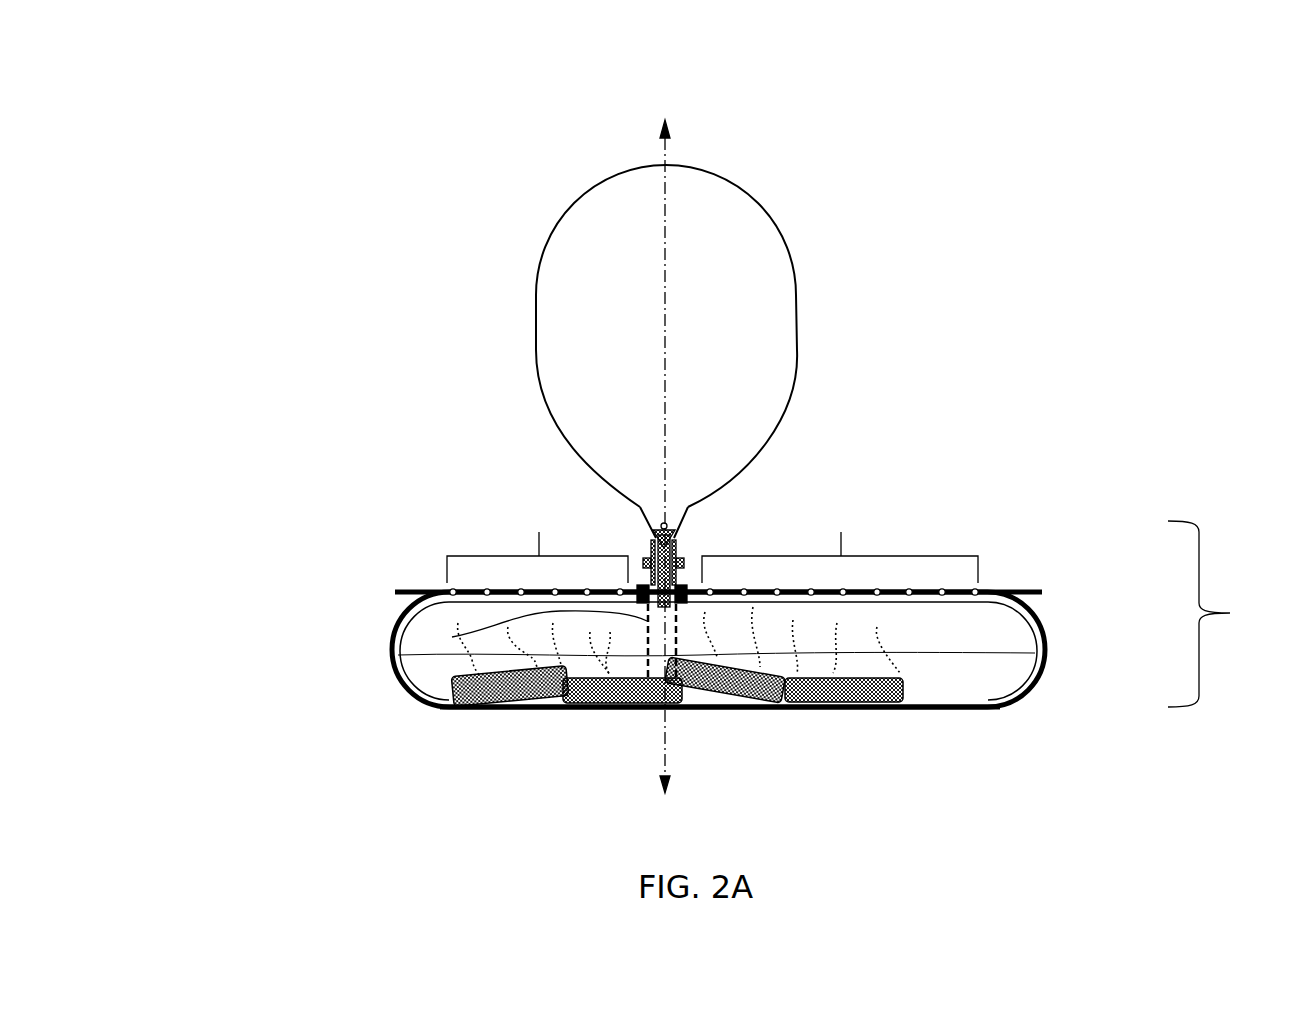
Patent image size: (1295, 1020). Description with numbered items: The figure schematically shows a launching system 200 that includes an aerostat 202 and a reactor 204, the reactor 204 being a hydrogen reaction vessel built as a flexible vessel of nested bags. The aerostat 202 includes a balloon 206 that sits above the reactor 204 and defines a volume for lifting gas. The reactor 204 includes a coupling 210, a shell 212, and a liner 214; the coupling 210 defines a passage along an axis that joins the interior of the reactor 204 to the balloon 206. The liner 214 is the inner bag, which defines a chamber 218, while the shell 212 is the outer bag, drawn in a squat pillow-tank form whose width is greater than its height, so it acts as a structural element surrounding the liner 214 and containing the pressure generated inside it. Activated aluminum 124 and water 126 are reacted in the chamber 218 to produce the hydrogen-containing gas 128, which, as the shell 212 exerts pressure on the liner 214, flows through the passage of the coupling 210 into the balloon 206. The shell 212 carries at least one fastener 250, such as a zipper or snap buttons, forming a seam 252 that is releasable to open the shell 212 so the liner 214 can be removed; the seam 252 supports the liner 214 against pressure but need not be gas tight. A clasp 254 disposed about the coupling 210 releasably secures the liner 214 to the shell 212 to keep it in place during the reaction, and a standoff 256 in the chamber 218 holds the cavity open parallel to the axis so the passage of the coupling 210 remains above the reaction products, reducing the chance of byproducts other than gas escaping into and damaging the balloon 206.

The launching system 200 is at (498, 80).
The aerostat 202 is at (817, 369).
The reactor 204 is at (1225, 614).
The balloon 206 is at (760, 212).
The coupling 210 is at (645, 557).
The shell 212 is at (1023, 598).
The liner 214 is at (992, 590).
The chamber 218 is at (986, 623).
The activated aluminum 124 is at (432, 700).
The water 126 is at (968, 687).
The hydrogen-containing gas 128 is at (462, 645).
The fastener 250 is at (877, 590).
The seam 252 is at (712, 539).
The clasp 254 is at (692, 584).
The standoff 256 is at (452, 637).